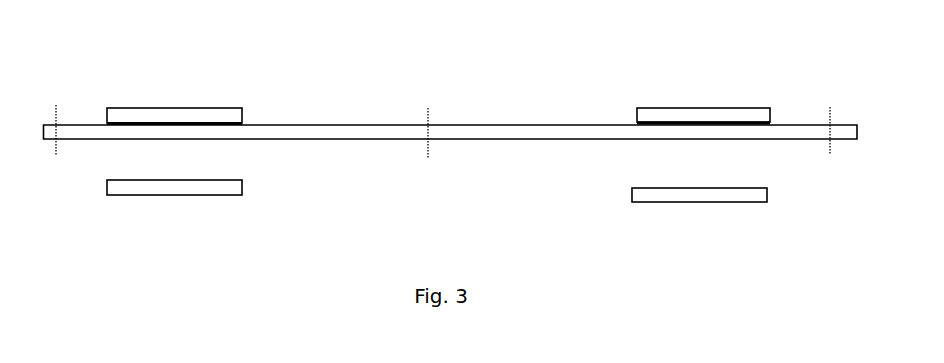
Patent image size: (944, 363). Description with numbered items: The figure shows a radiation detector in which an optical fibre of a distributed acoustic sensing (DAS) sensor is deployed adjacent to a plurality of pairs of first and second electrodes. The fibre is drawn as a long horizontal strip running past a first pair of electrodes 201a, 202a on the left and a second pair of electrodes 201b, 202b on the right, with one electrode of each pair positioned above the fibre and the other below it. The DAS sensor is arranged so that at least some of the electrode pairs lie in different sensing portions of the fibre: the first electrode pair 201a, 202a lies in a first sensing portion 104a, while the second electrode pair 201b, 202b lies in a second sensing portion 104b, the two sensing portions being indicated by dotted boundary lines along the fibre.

The first sensing portion 104a is at (318, 123).
The second sensing portion 104b is at (790, 123).
The first electrode of first pair 201a is at (179, 102).
The first electrode of second pair 201b is at (678, 102).
The second electrode of first pair 202a is at (185, 192).
The second electrode of second pair 202b is at (715, 199).